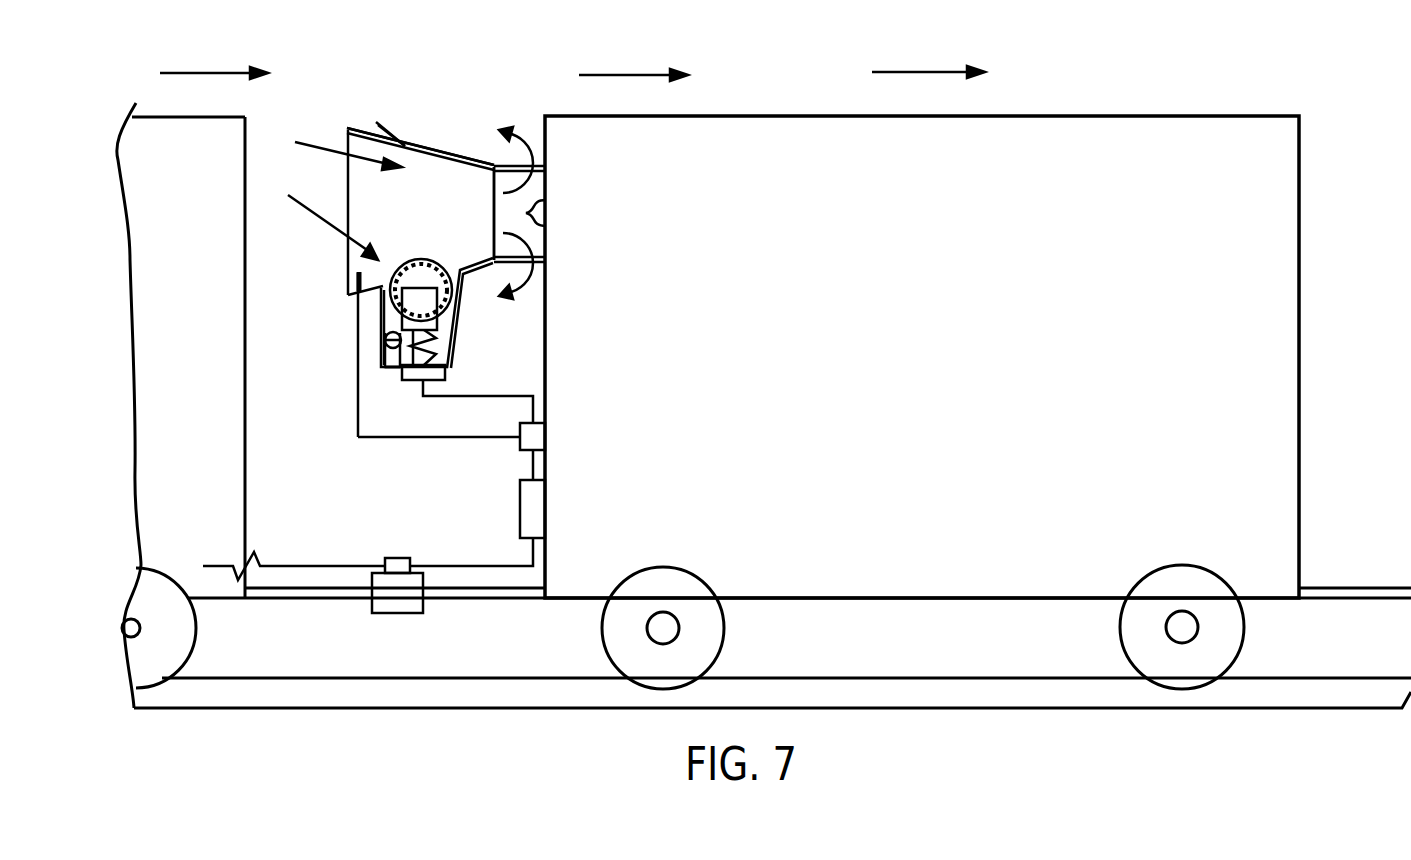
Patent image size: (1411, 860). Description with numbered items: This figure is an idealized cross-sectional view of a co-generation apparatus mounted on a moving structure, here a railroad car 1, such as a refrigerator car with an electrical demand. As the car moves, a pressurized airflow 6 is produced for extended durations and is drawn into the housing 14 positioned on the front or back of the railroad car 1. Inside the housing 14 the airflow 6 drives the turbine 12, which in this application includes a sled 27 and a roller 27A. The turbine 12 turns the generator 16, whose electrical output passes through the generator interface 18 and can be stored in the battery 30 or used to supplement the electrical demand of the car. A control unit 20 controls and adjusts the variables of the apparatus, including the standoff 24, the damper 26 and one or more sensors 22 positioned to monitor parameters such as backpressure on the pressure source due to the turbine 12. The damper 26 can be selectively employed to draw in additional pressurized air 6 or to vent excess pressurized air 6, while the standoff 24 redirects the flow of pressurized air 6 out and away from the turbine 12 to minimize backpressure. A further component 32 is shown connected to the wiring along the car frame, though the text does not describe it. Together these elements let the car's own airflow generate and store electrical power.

The railroad car 1 is at (885, 196).
The pressurized airflow 6 is at (210, 73).
The turbine 12 is at (402, 257).
The housing 14 is at (430, 148).
The generator 16 is at (432, 338).
The generator interface 18 is at (402, 373).
The control unit 20 is at (520, 448).
The sensor 22 is at (352, 282).
The standoff 24 is at (500, 170).
The damper 26 is at (390, 127).
The sled 27 is at (390, 323).
The roller 27A is at (380, 357).
The battery 30 is at (520, 518).
The sensor unit 32 is at (397, 557).